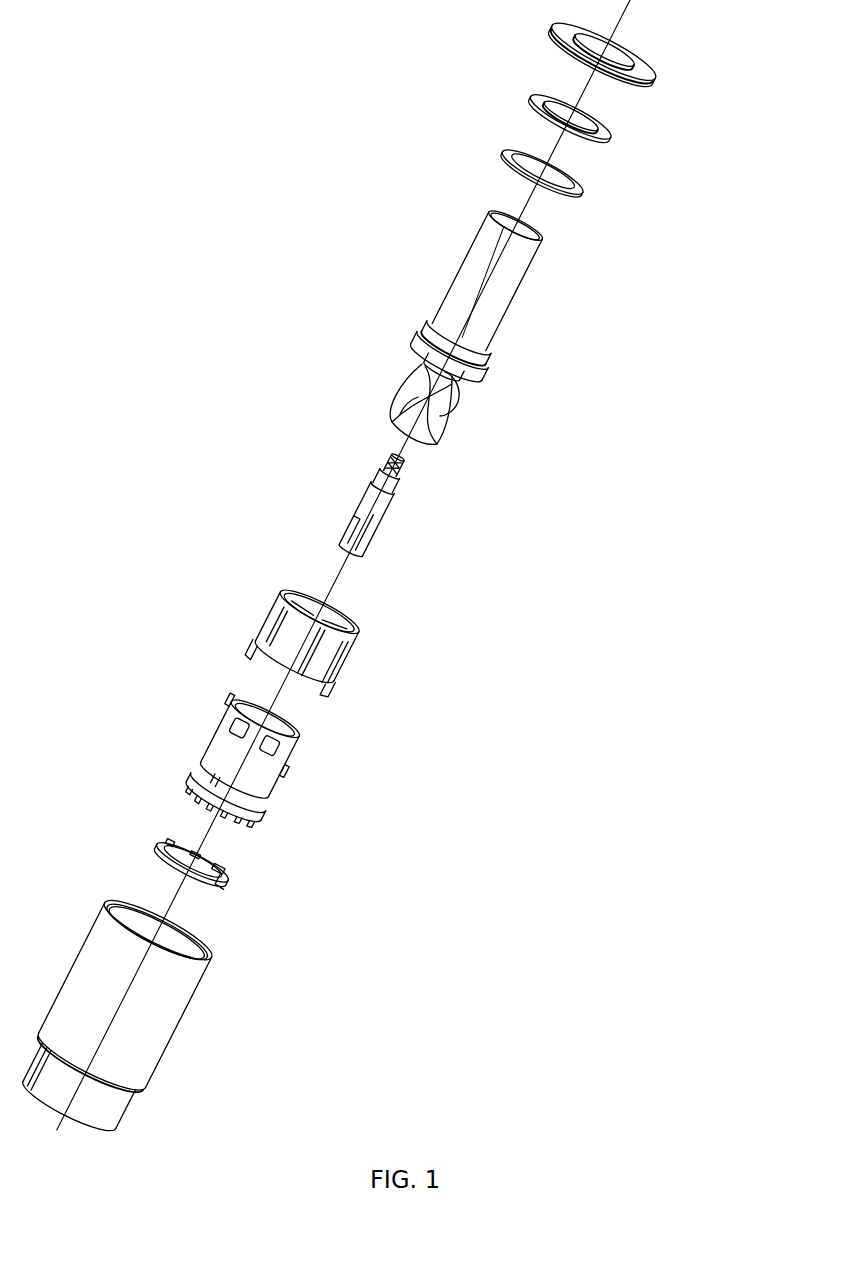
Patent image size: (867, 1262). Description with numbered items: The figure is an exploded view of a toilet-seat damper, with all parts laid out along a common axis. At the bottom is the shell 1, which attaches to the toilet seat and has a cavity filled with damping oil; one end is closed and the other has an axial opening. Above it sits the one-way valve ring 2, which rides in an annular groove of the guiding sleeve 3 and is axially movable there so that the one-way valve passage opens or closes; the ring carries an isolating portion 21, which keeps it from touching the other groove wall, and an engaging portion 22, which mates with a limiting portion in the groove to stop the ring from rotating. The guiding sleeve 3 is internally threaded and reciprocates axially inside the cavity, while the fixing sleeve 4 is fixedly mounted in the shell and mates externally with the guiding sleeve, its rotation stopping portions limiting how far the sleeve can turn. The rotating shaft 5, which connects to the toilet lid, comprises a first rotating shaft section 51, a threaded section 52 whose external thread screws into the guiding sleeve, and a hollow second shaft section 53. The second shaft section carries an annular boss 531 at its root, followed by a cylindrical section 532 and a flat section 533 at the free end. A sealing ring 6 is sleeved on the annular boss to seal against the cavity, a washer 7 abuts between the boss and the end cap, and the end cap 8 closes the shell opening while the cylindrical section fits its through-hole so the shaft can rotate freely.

The shell 1 is at (160, 1015).
The one-way valve ring 2 is at (330, 884).
The isolating portion 21 is at (220, 867).
The engaging portion 22 is at (222, 885).
The guiding sleeve 3 is at (252, 765).
The fixing sleeve 4 is at (310, 645).
The rotating shaft 5 is at (516, 382).
The first rotating shaft section 51 is at (380, 501).
The threaded section 52 is at (457, 392).
The second shaft section 53 is at (479, 297).
The annular boss 531 is at (413, 343).
The cylindrical section 532 is at (428, 327).
The flat section 533 is at (472, 277).
The sealing ring 6 is at (587, 188).
The washer 7 is at (613, 135).
The end cap 8 is at (657, 75).